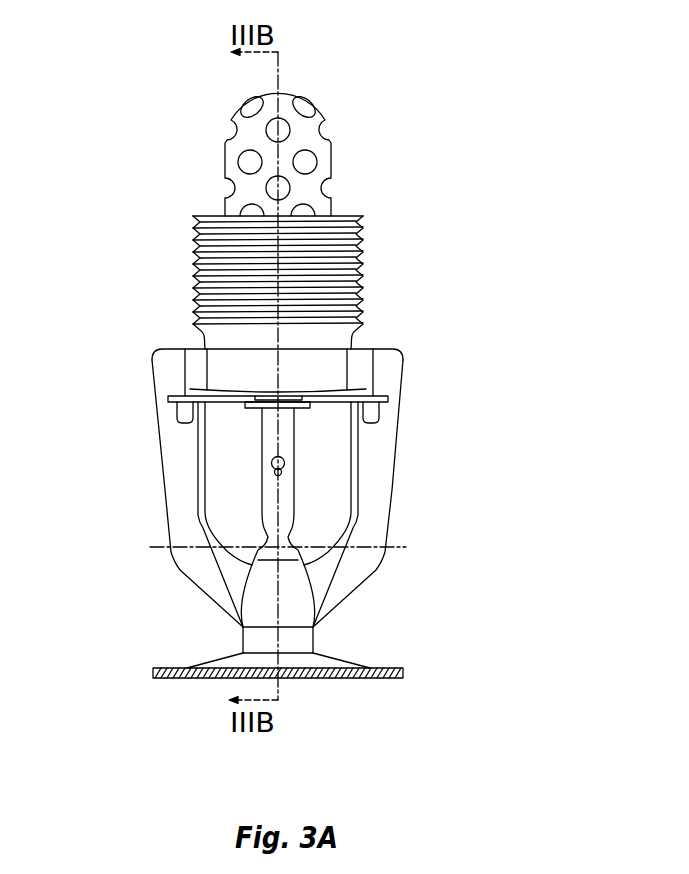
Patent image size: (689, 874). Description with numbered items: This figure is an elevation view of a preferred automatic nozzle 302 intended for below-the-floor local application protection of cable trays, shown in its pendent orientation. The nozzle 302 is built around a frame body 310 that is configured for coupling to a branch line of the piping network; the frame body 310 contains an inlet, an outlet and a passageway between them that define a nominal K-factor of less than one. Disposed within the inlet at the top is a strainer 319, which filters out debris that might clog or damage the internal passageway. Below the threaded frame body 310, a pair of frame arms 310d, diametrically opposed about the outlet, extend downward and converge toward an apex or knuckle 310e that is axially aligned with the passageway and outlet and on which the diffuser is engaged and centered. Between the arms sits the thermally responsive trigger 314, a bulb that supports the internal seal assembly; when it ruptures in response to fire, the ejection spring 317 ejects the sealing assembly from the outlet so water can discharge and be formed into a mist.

The automatic nozzle 302 is at (428, 140).
The strainer 319 is at (320, 118).
The frame body 310 is at (328, 371).
The frame arms 310d is at (177, 477).
The ejection spring 317 is at (170, 402).
The thermally responsive trigger 314 is at (287, 504).
The knuckle 310e is at (300, 643).